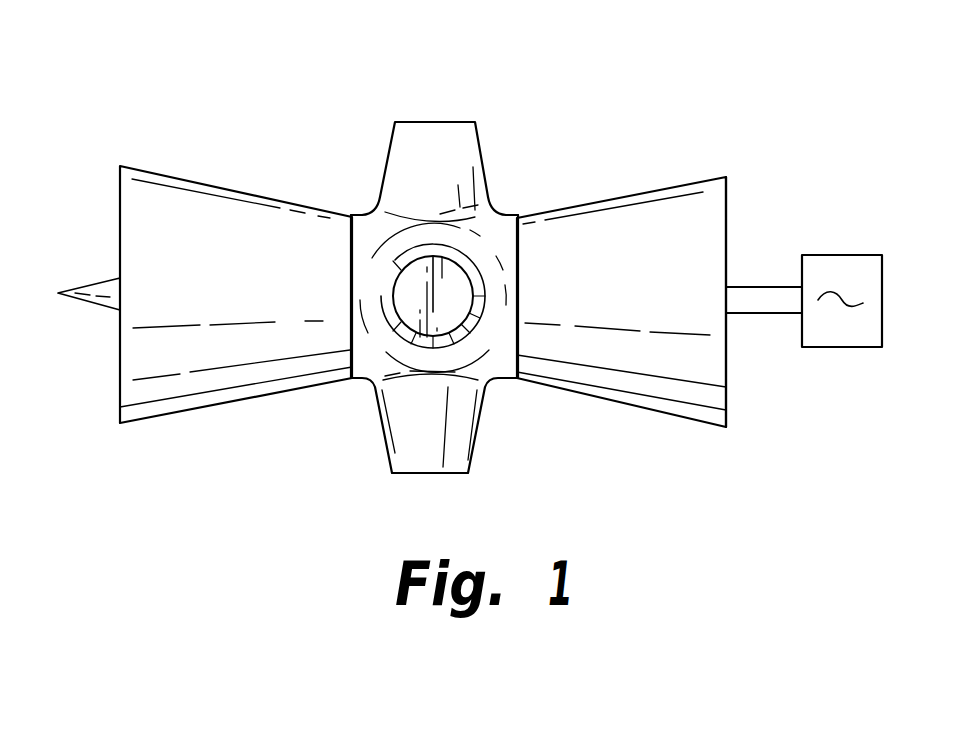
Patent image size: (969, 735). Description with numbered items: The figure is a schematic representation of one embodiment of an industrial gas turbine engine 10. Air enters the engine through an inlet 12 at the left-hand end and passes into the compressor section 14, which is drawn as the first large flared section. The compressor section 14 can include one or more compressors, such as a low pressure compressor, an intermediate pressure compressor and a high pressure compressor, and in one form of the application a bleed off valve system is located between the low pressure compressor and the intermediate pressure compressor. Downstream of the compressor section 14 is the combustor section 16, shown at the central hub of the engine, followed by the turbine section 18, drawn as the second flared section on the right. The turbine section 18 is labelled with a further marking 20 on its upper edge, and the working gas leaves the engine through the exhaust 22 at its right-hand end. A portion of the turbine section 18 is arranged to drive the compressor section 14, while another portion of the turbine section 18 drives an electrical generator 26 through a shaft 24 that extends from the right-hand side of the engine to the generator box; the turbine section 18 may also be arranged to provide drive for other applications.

The industrial gas turbine engine 10 is at (675, 88).
The inlet 12 is at (120, 218).
The compressor section 14 is at (230, 213).
The combustor section 16 is at (433, 116).
The turbine section 18 is at (567, 227).
The blade leading edge 20 is at (673, 207).
The exhaust 22 is at (728, 367).
The shaft 24 is at (758, 297).
The electrical generator 26 is at (842, 265).